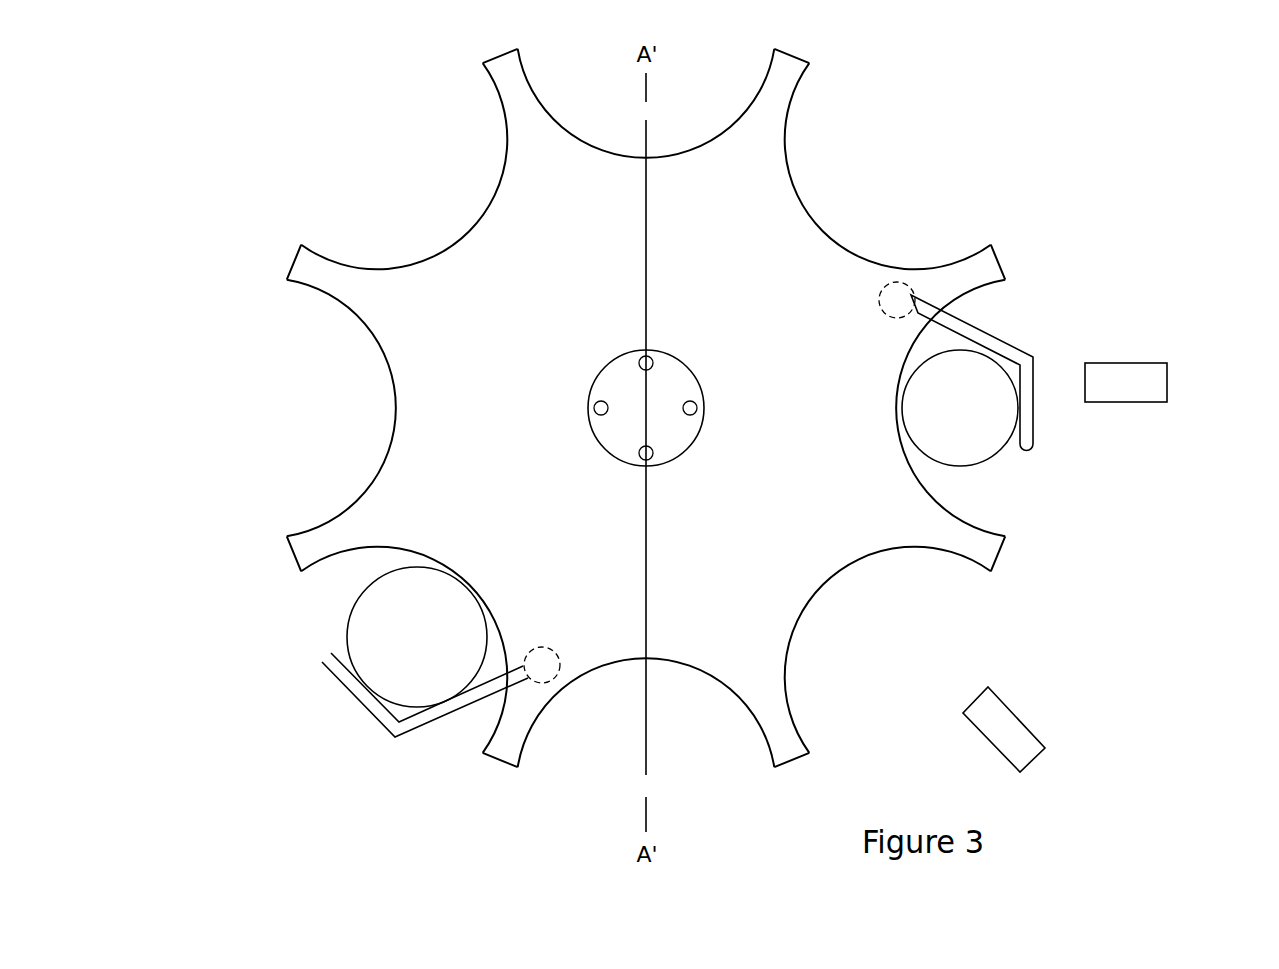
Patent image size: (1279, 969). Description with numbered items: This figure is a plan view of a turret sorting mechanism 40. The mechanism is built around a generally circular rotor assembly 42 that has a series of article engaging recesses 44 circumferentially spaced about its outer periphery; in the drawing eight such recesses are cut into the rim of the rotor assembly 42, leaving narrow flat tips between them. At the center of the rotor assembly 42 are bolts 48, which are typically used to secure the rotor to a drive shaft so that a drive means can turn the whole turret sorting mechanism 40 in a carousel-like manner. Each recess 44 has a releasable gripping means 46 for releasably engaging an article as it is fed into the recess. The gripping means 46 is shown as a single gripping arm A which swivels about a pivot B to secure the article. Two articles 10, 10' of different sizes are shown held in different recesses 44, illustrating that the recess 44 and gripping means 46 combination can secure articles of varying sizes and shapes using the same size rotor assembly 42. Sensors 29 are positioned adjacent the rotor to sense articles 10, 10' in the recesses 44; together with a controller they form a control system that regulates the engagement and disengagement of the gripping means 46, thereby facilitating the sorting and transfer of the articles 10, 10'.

The turret sorting mechanism 40 is at (955, 88).
The rotor assembly 42 is at (778, 258).
The article engaging recesses 44 is at (350, 382).
The releasable gripping means 46 is at (402, 730).
The bolts 48 is at (637, 352).
The article 10 is at (417, 637).
The article 10' is at (960, 408).
The sensors 29 is at (1155, 388).
The gripping arm A is at (345, 642).
The pivot B is at (550, 670).